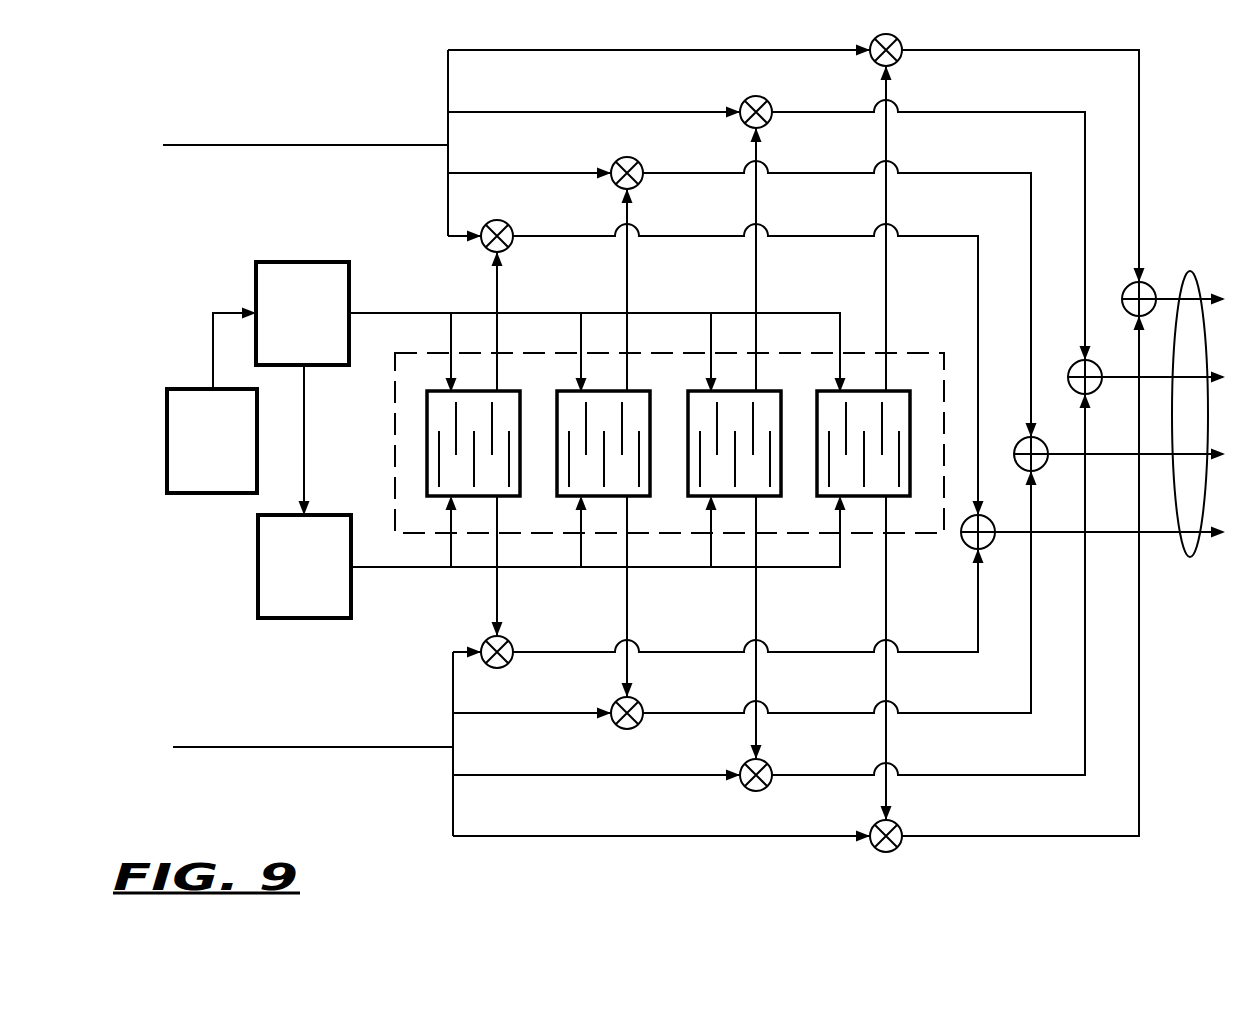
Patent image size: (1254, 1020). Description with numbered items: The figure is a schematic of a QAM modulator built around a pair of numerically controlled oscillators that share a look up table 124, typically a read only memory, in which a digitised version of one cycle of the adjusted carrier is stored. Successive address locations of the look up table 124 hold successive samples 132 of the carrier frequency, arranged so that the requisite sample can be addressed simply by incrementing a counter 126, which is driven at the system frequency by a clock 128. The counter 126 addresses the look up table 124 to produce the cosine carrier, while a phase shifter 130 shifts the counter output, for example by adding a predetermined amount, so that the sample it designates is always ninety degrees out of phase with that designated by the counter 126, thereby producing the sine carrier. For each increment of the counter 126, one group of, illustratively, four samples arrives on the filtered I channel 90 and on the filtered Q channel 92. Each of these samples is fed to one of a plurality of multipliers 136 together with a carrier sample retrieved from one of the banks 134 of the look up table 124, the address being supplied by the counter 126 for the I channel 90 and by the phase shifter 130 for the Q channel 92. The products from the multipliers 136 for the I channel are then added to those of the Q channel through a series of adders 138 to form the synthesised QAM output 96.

The filtered I channel 90 is at (212, 146).
The filtered Q channel 92 is at (230, 748).
The synthesised QAM output 96 is at (1190, 557).
The look up table 124 is at (410, 535).
The counter 126 is at (325, 366).
The clock 128 is at (212, 494).
The phase shifter 130 is at (305, 619).
The samples 132 is at (586, 462).
The banks 134 is at (688, 393).
The multipliers 136 is at (841, 82).
The adders 138 is at (1096, 365).